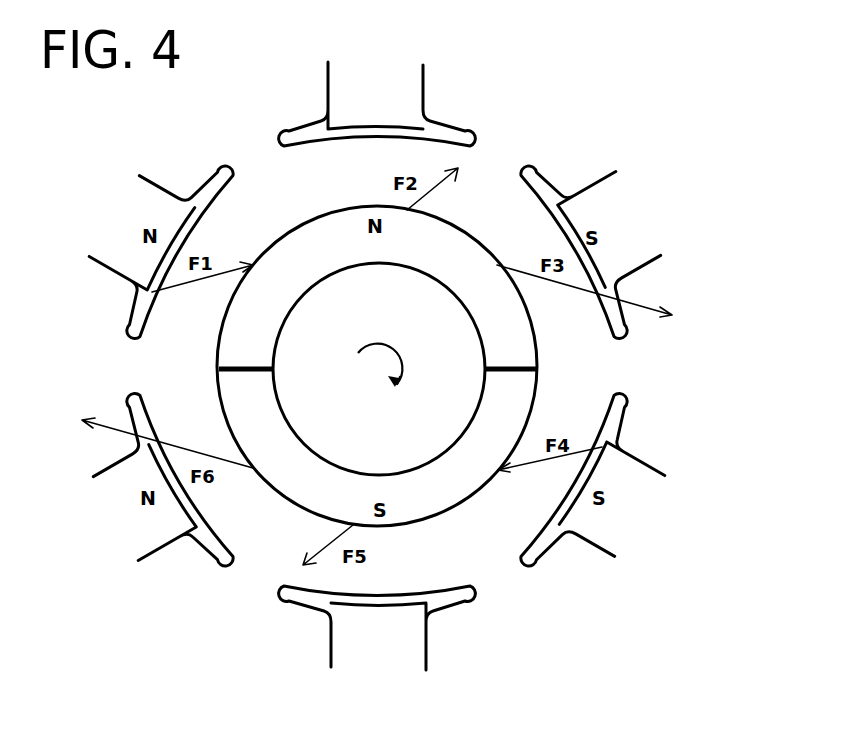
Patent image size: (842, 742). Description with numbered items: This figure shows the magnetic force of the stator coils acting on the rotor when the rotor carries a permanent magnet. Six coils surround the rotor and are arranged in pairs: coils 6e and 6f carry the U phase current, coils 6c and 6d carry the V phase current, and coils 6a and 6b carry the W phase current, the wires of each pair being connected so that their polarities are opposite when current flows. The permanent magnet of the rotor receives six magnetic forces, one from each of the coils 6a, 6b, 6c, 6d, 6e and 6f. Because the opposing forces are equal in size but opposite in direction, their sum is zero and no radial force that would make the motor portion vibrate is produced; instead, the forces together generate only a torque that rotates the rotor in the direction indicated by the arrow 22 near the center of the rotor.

The coil 6a is at (407, 91).
The coil 6b is at (340, 650).
The coil 6c is at (643, 184).
The coil 6d is at (110, 486).
The coil 6e is at (662, 484).
The coil 6f is at (148, 187).
The arrow 22 is at (409, 364).